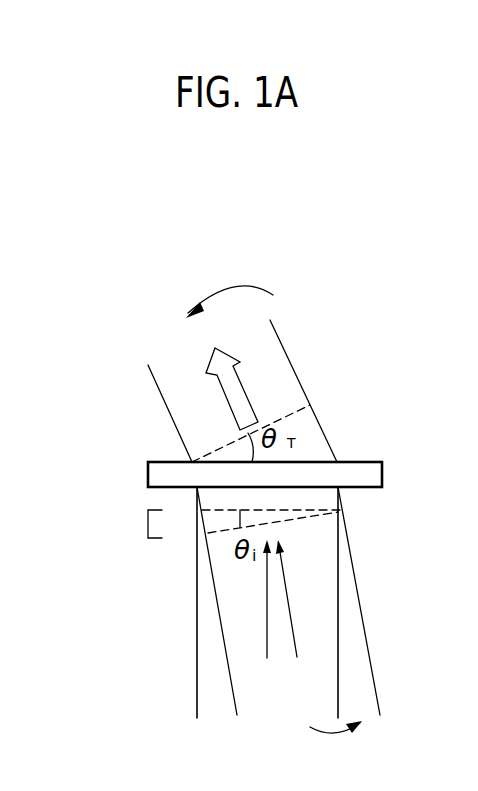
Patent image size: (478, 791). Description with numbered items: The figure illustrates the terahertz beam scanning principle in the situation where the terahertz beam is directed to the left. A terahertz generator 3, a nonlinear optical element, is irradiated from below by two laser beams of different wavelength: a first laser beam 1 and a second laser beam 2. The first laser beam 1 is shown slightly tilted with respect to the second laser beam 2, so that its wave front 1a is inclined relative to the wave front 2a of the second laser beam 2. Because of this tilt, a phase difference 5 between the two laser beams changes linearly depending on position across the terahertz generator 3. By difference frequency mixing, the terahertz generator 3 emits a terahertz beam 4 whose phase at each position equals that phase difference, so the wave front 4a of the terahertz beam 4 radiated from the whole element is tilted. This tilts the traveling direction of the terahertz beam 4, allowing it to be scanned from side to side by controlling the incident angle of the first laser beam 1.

The first laser beam 1 is at (292, 625).
The wave front of the first laser beam 1a is at (287, 522).
The second laser beam 2 is at (267, 613).
The wave front of the second laser beam 2a is at (220, 510).
The terahertz generator 3 is at (158, 472).
The terahertz beam 4 is at (243, 398).
The wave front of the terahertz beam 4a is at (277, 420).
The phase difference 5 is at (147, 527).